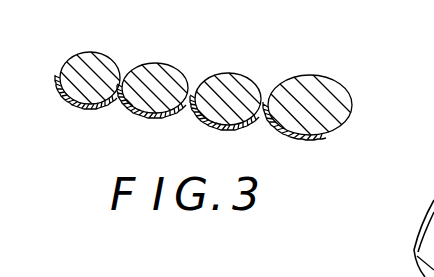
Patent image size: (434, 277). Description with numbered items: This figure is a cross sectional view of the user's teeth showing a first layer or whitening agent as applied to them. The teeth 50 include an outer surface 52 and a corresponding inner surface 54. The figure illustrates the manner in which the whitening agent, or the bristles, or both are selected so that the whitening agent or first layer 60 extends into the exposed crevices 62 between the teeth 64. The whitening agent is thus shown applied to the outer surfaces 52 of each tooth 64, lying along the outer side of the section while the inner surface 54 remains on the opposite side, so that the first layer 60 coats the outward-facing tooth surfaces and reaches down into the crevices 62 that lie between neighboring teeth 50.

The teeth 50 is at (311, 74).
The outer surface 52 is at (338, 132).
The inner surface 54 is at (238, 72).
The first layer 60 is at (165, 120).
The exposed crevices 62 is at (189, 72).
The tooth 64 is at (330, 93).